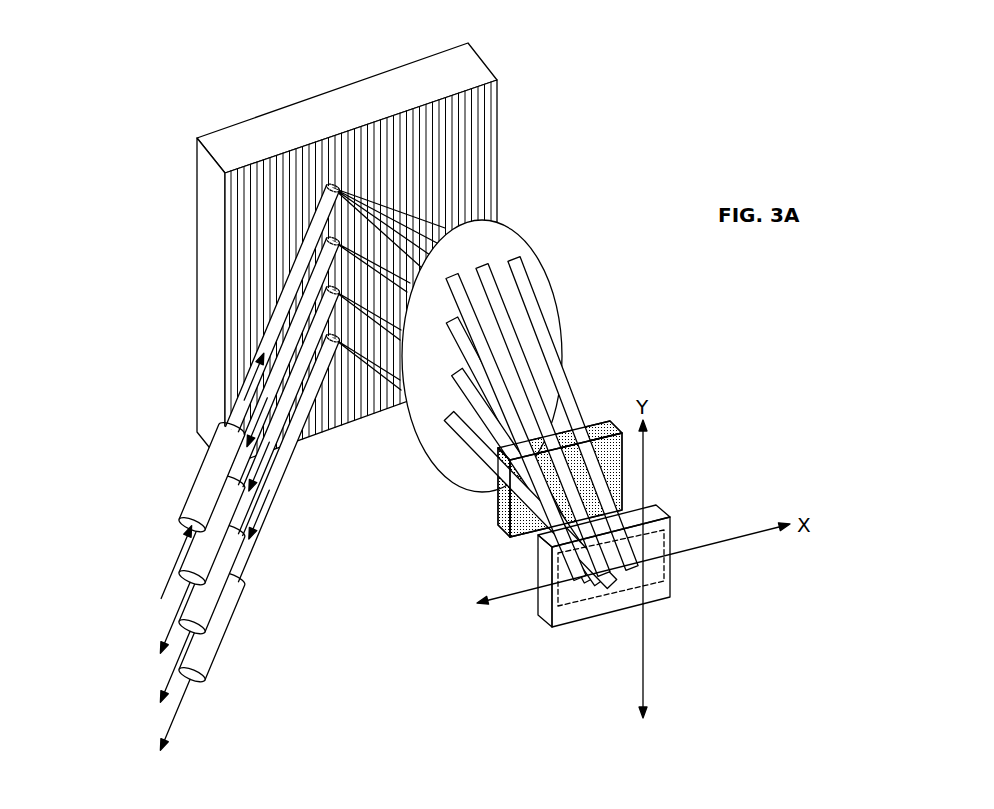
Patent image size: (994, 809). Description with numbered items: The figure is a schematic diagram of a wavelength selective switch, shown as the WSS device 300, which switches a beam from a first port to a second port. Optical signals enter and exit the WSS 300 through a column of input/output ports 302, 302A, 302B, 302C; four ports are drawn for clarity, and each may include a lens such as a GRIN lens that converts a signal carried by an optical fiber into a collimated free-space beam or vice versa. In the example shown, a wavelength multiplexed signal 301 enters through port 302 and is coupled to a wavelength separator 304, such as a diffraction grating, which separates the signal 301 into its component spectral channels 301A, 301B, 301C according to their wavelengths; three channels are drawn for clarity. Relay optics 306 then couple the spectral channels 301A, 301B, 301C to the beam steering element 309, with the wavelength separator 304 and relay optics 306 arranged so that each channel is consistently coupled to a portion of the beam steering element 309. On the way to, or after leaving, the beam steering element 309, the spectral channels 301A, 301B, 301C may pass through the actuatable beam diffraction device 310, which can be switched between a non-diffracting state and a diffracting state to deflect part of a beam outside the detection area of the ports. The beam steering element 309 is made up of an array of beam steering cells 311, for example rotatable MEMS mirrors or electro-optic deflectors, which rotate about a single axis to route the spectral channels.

The WSS device 300 is at (86, 161).
The wavelength multiplexed signal 301 is at (229, 382).
The spectral channel 301A is at (447, 276).
The spectral channel 301B is at (480, 268).
The spectral channel 301C is at (512, 258).
The input/output port 302 is at (178, 492).
The input/output port 302A is at (181, 550).
The input/output port 302B is at (182, 604).
The input/output port 302C is at (192, 652).
The wavelength separator 304 is at (490, 95).
The relay optics 306 is at (445, 450).
The beam steering element 309 is at (555, 628).
The actuatable beam diffraction device 310 is at (622, 441).
The beam steering cells 311 is at (616, 605).